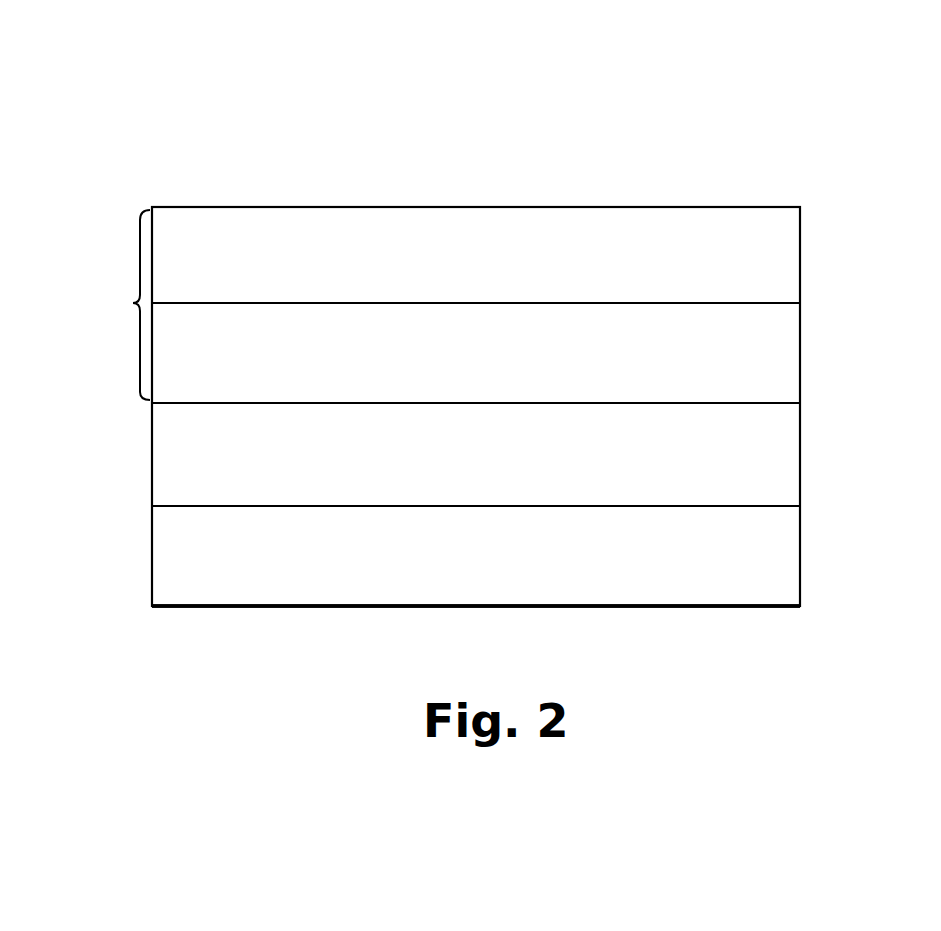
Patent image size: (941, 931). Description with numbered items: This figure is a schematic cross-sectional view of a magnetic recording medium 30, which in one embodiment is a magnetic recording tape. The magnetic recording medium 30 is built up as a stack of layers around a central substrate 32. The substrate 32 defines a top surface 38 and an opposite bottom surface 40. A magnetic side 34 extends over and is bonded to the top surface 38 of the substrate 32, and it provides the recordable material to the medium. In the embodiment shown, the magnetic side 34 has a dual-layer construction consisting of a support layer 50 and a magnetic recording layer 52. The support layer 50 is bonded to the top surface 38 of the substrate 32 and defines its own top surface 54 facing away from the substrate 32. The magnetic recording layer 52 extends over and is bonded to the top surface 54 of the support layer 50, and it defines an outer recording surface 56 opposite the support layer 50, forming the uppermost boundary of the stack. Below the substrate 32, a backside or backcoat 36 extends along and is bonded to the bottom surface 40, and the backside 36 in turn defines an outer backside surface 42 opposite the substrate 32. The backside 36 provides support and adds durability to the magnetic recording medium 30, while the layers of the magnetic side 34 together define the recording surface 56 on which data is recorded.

The magnetic recording medium 30 is at (842, 115).
The substrate 32 is at (495, 474).
The magnetic side 34 is at (125, 305).
The backside 36 is at (495, 582).
The top surface 38 is at (778, 403).
The bottom surface 40 is at (772, 508).
The backside surface 42 is at (772, 608).
The support layer 50 is at (495, 372).
The magnetic recording layer 52 is at (495, 268).
The top surface of support layer 54 is at (778, 303).
The recording surface 56 is at (752, 207).